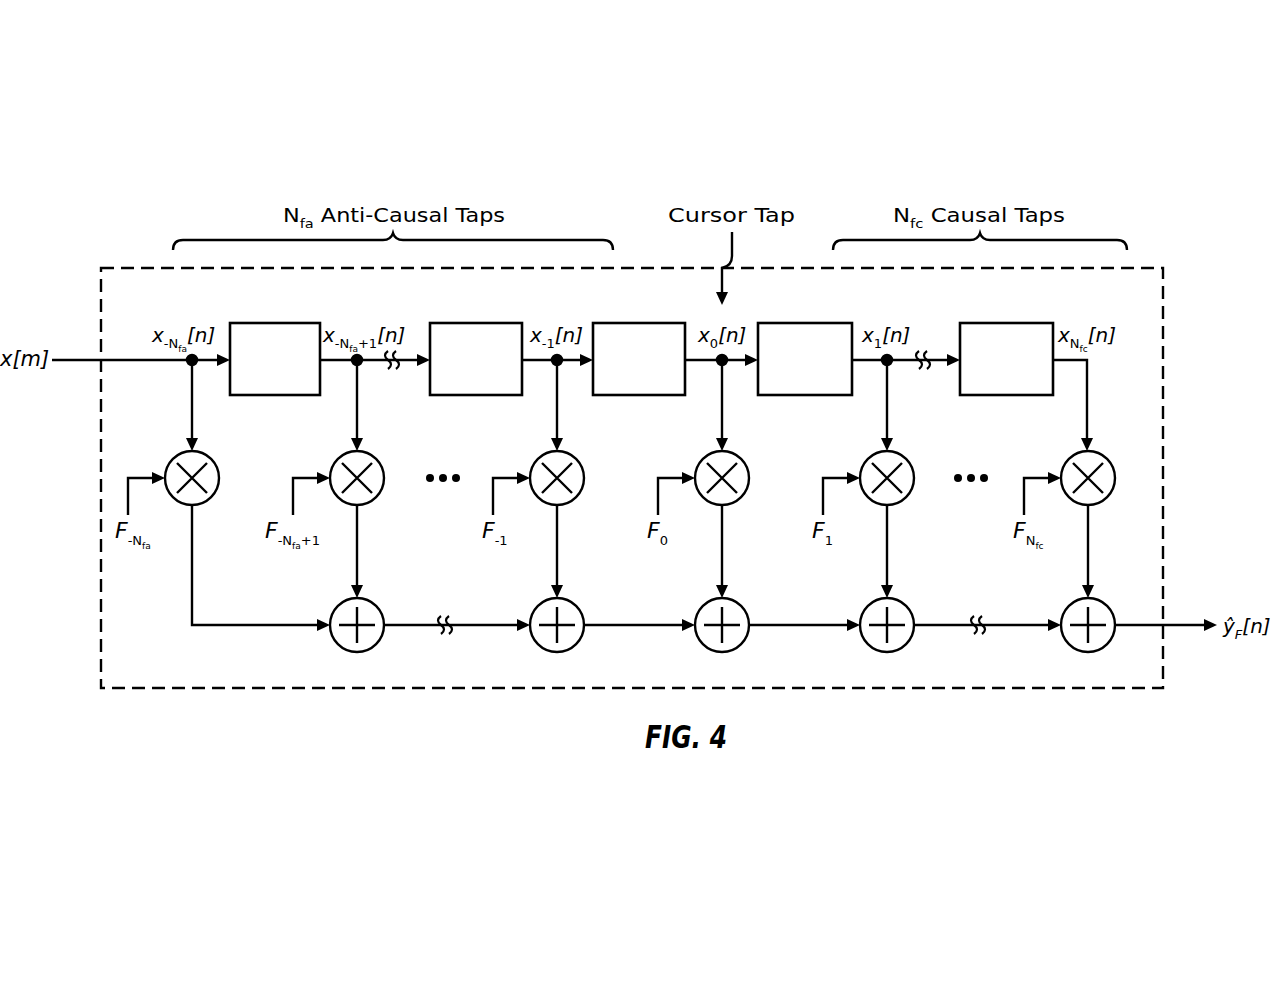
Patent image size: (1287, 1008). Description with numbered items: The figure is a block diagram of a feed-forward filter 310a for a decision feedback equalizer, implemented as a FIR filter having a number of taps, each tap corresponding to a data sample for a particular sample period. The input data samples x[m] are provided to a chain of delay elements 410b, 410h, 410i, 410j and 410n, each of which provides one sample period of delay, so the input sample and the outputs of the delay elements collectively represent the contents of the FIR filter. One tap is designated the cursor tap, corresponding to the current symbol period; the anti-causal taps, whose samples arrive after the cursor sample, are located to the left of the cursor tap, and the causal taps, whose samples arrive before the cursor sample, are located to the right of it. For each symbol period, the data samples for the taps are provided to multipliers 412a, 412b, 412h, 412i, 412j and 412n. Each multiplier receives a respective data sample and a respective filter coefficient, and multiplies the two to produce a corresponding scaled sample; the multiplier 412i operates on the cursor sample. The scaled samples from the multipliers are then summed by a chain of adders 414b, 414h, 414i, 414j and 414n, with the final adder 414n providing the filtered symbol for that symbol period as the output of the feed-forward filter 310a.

The feed-forward filter 310a is at (1163, 360).
The delay element 410b is at (283, 306).
The delay element 410h is at (484, 306).
The delay element 410i is at (634, 323).
The delay element 410j is at (800, 323).
The delay element 410n is at (1001, 323).
The multiplier 412a is at (211, 459).
The multiplier 412b is at (376, 459).
The multiplier 412h is at (576, 459).
The multiplier 412i is at (741, 459).
The multiplier 412j is at (906, 459).
The multiplier 412n is at (1107, 459).
The adder 414b is at (376, 606).
The adder 414h is at (576, 606).
The adder 414i is at (741, 606).
The adder 414j is at (906, 606).
The adder 414n is at (1107, 606).